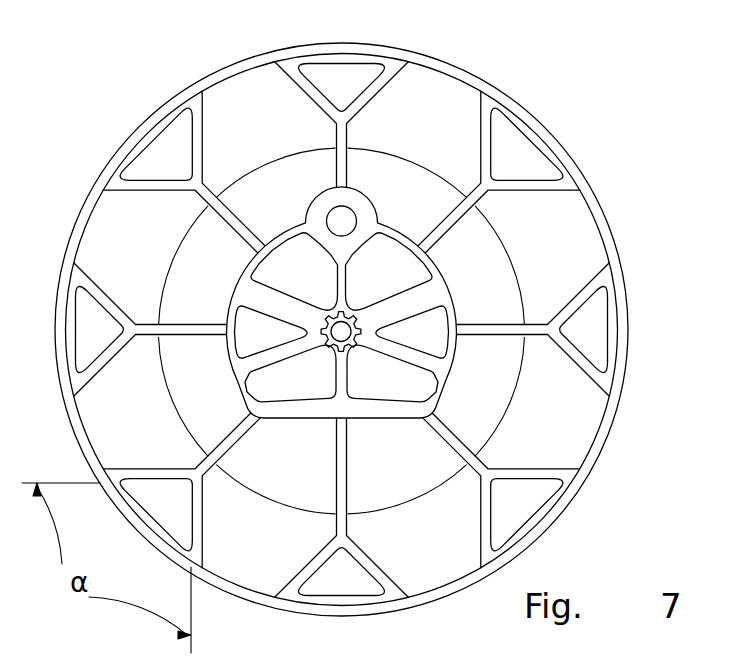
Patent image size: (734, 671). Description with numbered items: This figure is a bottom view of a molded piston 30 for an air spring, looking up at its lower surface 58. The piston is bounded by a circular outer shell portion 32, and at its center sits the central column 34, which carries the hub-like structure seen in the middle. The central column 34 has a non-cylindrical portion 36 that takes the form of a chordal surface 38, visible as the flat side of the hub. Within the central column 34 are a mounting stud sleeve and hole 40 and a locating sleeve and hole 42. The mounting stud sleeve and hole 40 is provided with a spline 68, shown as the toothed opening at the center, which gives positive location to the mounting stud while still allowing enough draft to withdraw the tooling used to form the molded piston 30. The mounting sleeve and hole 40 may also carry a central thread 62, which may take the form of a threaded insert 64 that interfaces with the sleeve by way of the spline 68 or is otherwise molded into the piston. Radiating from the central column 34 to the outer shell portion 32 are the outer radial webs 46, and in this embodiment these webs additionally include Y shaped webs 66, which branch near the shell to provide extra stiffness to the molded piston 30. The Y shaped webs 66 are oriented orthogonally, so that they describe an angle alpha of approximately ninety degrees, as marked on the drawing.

The molded piston 30 is at (476, 74).
The outer shell portion 32 is at (607, 212).
The central column 34 is at (452, 290).
The non-cylindrical portion 36 is at (380, 419).
The chordal surface 38 is at (285, 419).
The mounting stud sleeve and hole 40 is at (305, 339).
The locating sleeve and hole 42 is at (328, 205).
The outer radial webs 46 is at (230, 237).
The lower surface 58 is at (273, 52).
The central thread 62 is at (360, 348).
The threaded insert 64 is at (360, 340).
The Y shaped webs 66 is at (190, 137).
The spline 68 is at (340, 355).